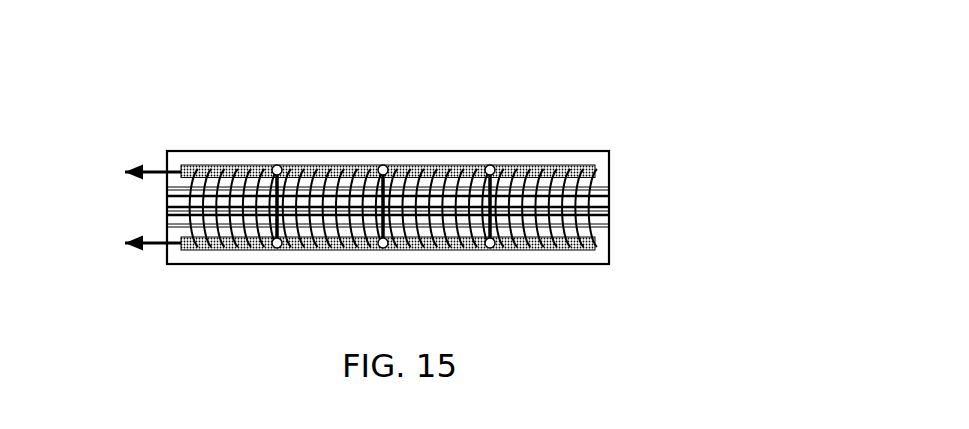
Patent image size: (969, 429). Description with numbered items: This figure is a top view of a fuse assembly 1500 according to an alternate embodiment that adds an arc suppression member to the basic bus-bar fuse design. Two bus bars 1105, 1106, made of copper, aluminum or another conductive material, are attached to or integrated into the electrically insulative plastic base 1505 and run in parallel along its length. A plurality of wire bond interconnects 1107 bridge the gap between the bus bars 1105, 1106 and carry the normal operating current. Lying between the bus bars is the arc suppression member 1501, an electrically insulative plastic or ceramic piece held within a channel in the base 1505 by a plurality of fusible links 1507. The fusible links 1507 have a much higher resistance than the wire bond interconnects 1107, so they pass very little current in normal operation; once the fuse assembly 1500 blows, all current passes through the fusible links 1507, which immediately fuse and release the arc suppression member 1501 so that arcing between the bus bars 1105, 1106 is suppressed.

The fuse assembly 1500 is at (361, 168).
The base 1505 is at (573, 160).
The arc suppression member 1501 is at (600, 197).
The wire bond interconnects 1107 is at (593, 215).
The bus bar 1105 is at (333, 167).
The bus bar 1106 is at (315, 247).
The fusible links 1507 is at (278, 251).